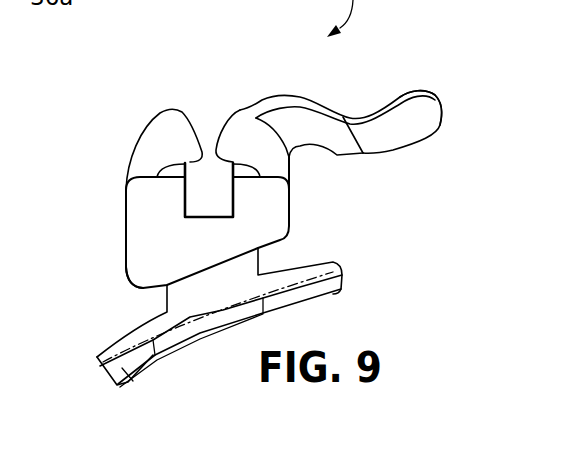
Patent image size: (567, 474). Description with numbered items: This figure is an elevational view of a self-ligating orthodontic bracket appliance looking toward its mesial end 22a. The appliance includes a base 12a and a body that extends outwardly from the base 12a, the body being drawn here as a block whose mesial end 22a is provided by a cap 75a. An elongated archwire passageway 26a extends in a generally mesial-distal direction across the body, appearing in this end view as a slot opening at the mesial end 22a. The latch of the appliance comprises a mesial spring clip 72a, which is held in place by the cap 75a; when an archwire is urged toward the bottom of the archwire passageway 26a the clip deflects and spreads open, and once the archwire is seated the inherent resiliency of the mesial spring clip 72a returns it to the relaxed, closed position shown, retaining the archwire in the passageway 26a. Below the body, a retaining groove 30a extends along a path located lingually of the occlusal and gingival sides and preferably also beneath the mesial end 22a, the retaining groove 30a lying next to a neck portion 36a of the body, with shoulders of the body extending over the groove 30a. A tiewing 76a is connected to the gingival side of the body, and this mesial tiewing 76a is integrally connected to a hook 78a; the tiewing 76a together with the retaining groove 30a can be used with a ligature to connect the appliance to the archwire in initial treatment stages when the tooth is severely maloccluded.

The base 12a is at (133, 382).
The mesial end 22a is at (140, 217).
The archwire passageway 26a is at (188, 190).
The retaining groove 30a is at (140, 303).
The neck portion 36a is at (248, 265).
The mesial spring clip 72a is at (157, 143).
The cap 75a is at (143, 250).
The tiewing 76a is at (292, 117).
The hook 78a is at (418, 110).